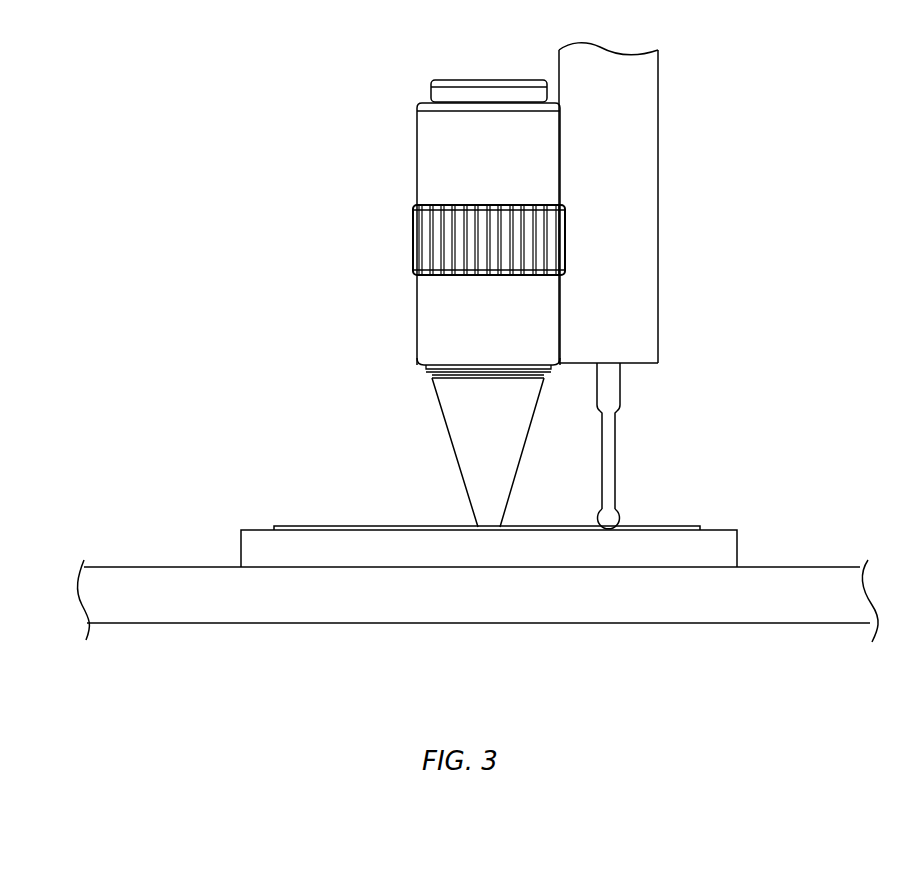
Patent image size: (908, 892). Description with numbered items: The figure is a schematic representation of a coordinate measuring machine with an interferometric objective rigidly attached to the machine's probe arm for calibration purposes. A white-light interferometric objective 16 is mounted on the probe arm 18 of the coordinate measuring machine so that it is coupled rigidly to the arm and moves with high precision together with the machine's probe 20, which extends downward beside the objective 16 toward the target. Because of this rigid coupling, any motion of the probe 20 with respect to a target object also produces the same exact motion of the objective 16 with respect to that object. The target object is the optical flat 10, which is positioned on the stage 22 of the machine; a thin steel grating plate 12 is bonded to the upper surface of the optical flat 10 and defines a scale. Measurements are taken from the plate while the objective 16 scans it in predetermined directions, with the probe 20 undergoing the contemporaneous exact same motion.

The optical flat 10 is at (255, 530).
The steel grating plate 12 is at (400, 525).
The white-light interferometric objective 16 is at (427, 158).
The probe arm 18 is at (628, 112).
The probe 20 is at (615, 487).
The stage 22 is at (780, 585).